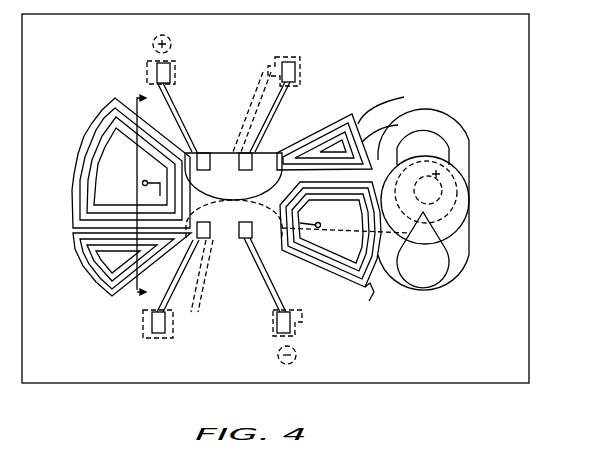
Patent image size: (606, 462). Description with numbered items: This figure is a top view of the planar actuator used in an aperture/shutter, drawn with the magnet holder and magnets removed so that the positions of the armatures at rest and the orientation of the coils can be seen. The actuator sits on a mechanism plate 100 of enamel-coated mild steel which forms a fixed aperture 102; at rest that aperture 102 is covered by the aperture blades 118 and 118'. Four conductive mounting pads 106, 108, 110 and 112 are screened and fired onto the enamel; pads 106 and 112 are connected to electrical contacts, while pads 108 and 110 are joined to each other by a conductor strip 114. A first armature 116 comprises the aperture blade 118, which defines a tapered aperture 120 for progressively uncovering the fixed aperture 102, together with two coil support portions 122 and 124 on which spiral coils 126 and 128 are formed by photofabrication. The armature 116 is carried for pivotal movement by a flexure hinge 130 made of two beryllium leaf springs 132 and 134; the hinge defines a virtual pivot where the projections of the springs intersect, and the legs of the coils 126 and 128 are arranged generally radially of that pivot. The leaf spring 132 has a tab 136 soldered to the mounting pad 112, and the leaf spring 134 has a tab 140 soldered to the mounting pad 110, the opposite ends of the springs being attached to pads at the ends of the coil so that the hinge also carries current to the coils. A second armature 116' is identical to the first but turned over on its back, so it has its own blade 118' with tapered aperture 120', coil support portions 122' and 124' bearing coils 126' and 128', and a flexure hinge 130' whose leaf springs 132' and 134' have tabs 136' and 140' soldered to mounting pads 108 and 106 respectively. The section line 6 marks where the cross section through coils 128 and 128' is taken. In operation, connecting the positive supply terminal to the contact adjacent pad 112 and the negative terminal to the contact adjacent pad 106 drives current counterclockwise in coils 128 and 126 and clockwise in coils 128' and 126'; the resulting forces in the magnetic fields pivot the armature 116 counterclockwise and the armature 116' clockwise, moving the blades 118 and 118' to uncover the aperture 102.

The section line 6— 6 is at (148, 196).
The mechanism plate 100 is at (520, 186).
The fixed aperture 102 is at (470, 185).
The conductive mounting pad 106 is at (301, 332).
The conductive mounting pad 108 is at (144, 335).
The conductive mounting pad 110 is at (300, 76).
The conductive mounting pad 112 is at (153, 68).
The conductor strip 114 is at (192, 292).
The first armature 116 is at (233, 176).
The second armature 116' is at (298, 219).
The aperture blade 118 is at (448, 134).
The aperture blade 118' is at (453, 253).
The tapered aperture 120 is at (458, 139).
The tapered aperture 120' is at (461, 250).
The coil support portion 122 is at (381, 102).
The coil support portion 122' is at (385, 310).
The coil support portion 124 is at (123, 272).
The coil support portion 124' is at (117, 163).
The spiral coil 126 is at (363, 116).
The spiral coil 126' is at (330, 244).
The spiral coil 128 is at (108, 264).
The spiral coil 128' is at (107, 164).
The flexure hinge 130 is at (230, 112).
The flexure hinge 130' is at (225, 268).
The leaf spring 132 is at (187, 117).
The leaf spring 132' is at (196, 282).
The leaf spring 134 is at (289, 117).
The leaf spring 134' is at (259, 275).
The tab 136 is at (181, 59).
The tab 136' is at (185, 332).
The tab 140 is at (305, 64).
The tab 140' is at (270, 337).